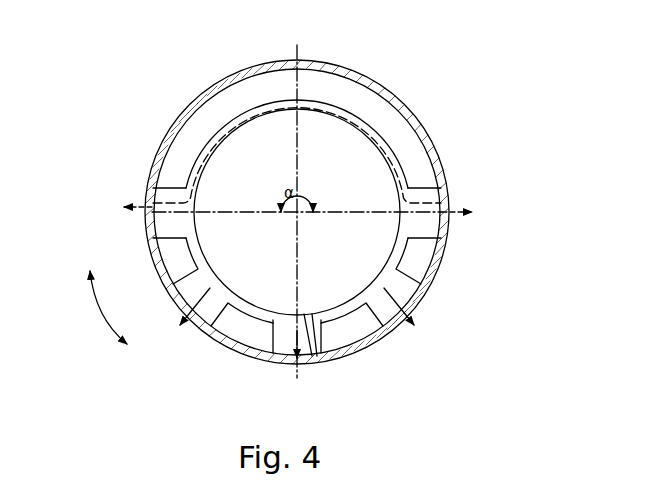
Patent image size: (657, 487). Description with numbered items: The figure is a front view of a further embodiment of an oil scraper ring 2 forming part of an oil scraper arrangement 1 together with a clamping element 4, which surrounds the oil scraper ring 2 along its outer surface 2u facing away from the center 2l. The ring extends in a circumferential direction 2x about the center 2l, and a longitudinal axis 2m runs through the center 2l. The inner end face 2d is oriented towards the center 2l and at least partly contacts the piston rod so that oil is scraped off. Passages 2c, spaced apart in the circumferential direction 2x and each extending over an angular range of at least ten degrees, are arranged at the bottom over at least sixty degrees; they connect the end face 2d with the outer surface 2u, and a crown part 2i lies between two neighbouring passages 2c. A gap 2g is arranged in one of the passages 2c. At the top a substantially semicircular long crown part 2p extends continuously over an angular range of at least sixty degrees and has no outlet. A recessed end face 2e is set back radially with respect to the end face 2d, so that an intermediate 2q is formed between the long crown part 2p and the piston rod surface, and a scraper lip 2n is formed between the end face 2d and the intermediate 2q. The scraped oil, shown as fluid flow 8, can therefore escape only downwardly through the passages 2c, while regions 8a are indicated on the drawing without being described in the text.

The oil scraper arrangement 1 is at (384, 77).
The oil scraper ring 2 is at (240, 92).
The passages 2c is at (162, 225).
The end face 2d is at (366, 144).
The recessed end face 2e is at (246, 122).
The gap 2g is at (315, 347).
The crown part 2i is at (172, 262).
The center 2l is at (322, 214).
The longitudinal axis 2m is at (362, 222).
The scraper lip 2n is at (212, 158).
The long crown part 2p is at (402, 130).
The intermediate 2q is at (331, 106).
The outer surface 2u is at (438, 156).
The circumferential direction 2x is at (102, 313).
The clamping element 4 is at (392, 96).
The fluid flow 8 is at (135, 205).
The load application regions 8a is at (218, 138).